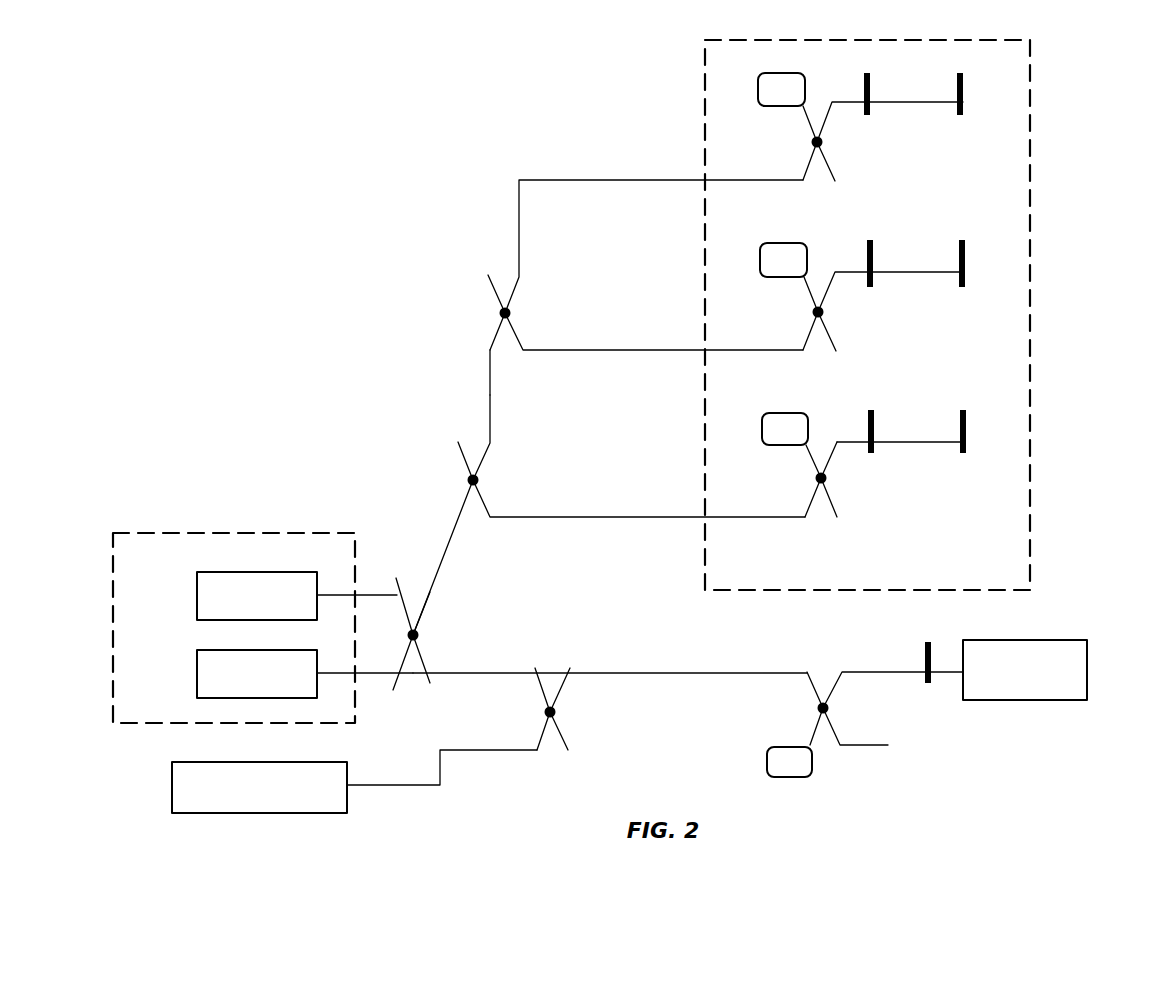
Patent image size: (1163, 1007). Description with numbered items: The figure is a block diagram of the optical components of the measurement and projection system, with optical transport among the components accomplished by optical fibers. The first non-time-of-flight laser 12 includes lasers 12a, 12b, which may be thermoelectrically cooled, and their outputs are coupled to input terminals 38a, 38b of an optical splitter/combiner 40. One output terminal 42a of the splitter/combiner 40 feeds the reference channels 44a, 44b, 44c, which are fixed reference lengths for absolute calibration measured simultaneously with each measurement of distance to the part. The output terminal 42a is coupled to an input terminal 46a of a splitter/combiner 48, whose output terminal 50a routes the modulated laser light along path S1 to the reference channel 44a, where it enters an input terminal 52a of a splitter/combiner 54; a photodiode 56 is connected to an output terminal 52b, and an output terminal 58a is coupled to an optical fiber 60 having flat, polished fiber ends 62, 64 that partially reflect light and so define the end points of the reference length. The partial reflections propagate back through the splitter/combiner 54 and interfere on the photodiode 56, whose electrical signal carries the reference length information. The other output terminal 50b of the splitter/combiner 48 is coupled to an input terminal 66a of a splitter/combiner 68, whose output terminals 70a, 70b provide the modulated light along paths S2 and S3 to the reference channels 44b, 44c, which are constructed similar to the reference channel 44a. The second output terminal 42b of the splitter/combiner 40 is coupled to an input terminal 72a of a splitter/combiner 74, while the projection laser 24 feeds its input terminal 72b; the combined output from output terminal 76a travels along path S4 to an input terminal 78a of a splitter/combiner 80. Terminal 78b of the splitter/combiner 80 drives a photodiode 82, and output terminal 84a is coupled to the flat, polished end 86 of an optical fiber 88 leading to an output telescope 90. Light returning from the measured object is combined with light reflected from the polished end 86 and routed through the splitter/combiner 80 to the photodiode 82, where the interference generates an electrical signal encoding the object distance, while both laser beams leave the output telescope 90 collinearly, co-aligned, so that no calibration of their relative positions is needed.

The first non-time-of-flight laser 12 is at (128, 566).
The laser 12a is at (197, 605).
The laser 12b is at (197, 683).
The projection laser 24 is at (172, 794).
The input terminal 38a is at (396, 588).
The input terminal 38b is at (392, 690).
The optical splitter/combiner 40 is at (435, 637).
The output terminal 42a is at (432, 597).
The output terminal 42b is at (427, 680).
The reference channel 44a is at (936, 477).
The reference channel 44b is at (1050, 278).
The reference channel 44c is at (1050, 112).
The input terminal 46a is at (458, 517).
The splitter/combiner 48 is at (445, 478).
The output terminal 50a is at (492, 522).
The output terminal 50b is at (492, 443).
The input terminal 52a is at (797, 520).
The output terminal 52b is at (809, 455).
The splitter/combiner 54 is at (838, 536).
The photodiode 56 is at (785, 412).
The output terminal 58a is at (840, 448).
The optical fiber 60 is at (926, 446).
The fiber end 62 is at (874, 425).
The fiber end 64 is at (966, 425).
The input terminal 66a is at (488, 349).
The splitter/combiner 68 is at (475, 311).
The output terminal 70a is at (524, 354).
The output terminal 70b is at (523, 277).
The input terminal 72a is at (537, 666).
The input terminal 72b is at (540, 748).
The splitter/combiner 74 is at (570, 714).
The output terminal 76a is at (569, 668).
The input terminal 78a is at (808, 666).
The output terminal 78b is at (812, 735).
The splitter/combiner 80 is at (848, 710).
The photodiode 82 is at (806, 780).
The output terminal 84a is at (843, 668).
The polished end 86 is at (931, 650).
The optical fiber 88 is at (946, 676).
The output telescope 90 is at (1097, 675).
The sensor signal path S1 is at (652, 517).
The sensor signal path S2 is at (667, 350).
The sensor signal path S3 is at (667, 180).
The return signal path S4 is at (690, 673).